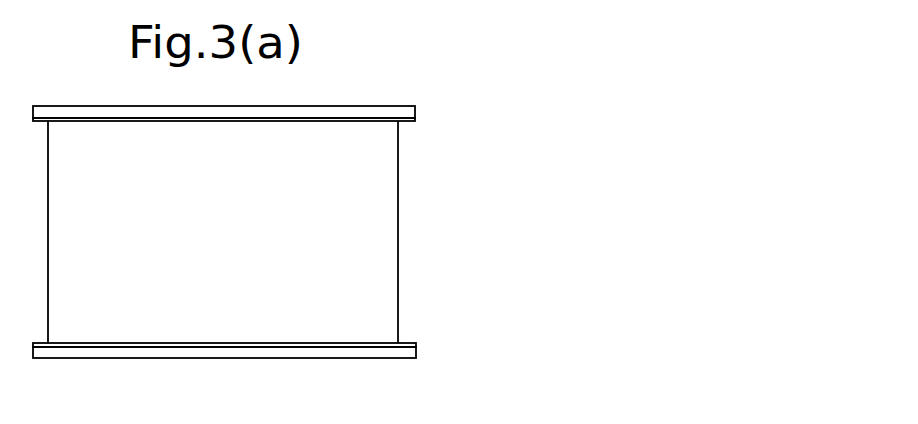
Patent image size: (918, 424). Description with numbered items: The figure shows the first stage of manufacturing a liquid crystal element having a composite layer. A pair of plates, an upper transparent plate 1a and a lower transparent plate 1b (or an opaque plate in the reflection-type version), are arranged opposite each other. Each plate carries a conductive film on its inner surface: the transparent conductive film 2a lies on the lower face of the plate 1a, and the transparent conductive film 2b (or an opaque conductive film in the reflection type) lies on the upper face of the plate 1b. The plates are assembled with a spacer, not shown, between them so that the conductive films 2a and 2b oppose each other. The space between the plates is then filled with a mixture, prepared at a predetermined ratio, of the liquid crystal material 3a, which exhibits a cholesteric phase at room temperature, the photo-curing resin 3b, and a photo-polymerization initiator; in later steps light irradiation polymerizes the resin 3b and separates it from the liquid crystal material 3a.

The transparent plate 1a is at (415, 110).
The transparent conductive film 2a is at (370, 121).
The liquid crystal material 3a is at (223, 232).
The photo-curing resin 3b is at (265, 287).
The transparent conductive film 2b is at (380, 343).
The transparent plate 1b is at (416, 352).